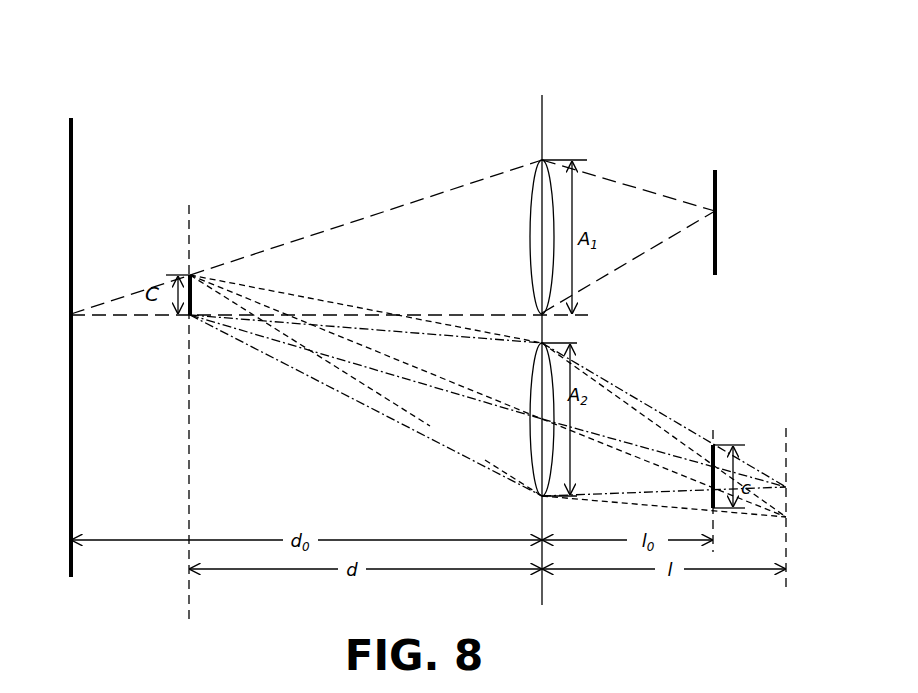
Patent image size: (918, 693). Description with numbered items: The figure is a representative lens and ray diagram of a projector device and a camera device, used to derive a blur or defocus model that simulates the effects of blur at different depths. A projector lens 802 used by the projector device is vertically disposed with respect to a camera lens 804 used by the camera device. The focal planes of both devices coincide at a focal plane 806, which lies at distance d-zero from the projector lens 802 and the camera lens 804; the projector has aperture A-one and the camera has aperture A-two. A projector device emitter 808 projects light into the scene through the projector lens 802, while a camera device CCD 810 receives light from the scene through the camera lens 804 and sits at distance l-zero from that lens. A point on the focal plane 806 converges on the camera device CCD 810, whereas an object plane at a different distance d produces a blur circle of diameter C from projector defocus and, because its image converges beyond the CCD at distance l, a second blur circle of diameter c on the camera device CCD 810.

The projector lens 802 is at (530, 232).
The camera lens 804 is at (530, 437).
The focal plane 806 is at (72, 156).
The projector device emitter 808 is at (712, 198).
The camera device CCD 810 is at (711, 473).